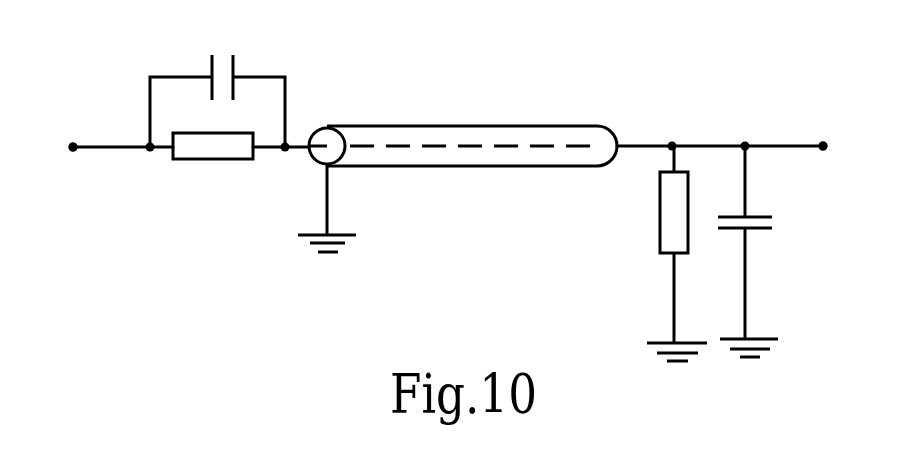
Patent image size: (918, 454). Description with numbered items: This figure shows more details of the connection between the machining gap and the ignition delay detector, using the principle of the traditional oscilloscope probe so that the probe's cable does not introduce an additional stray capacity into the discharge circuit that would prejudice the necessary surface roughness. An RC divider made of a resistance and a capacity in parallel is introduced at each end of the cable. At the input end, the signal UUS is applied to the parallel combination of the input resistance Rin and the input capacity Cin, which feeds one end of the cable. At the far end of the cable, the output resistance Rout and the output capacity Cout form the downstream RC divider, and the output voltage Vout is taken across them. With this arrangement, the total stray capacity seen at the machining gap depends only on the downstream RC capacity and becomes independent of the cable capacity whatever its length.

The input voltage source terminal UUS is at (67, 122).
The input capacitor Cin is at (217, 74).
The input resistor Rin is at (213, 177).
The output resistor Rout is at (633, 253).
The output capacitor Cout is at (781, 251).
The output voltage terminal Vout is at (817, 119).